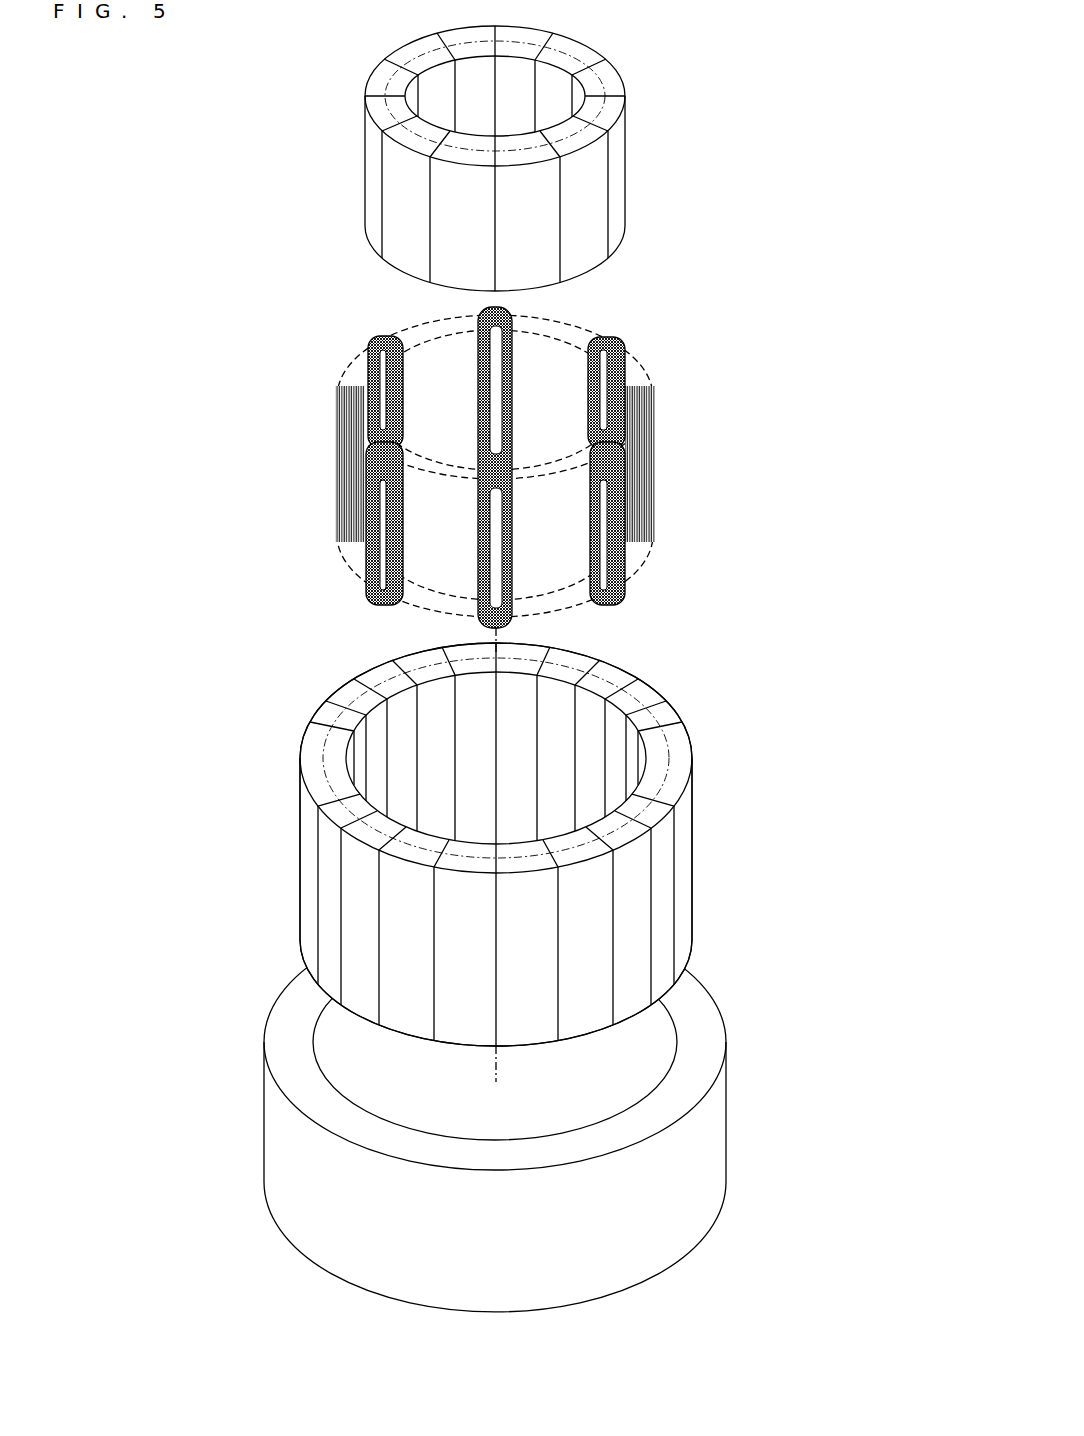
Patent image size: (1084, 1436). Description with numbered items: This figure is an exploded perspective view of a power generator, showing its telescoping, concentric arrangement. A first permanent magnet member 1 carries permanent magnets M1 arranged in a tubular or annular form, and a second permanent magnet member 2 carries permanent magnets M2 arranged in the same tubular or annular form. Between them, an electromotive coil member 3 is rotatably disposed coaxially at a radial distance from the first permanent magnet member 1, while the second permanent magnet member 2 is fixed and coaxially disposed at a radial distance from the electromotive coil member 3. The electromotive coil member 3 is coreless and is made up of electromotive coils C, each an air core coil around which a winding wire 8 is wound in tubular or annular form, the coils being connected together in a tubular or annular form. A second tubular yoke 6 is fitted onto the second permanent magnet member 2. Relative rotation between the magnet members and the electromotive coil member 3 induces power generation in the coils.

The first permanent magnet member 1 is at (646, 178).
The permanent magnets M1 is at (378, 100).
The second permanent magnet member 2 is at (707, 830).
The permanent magnets M2 is at (629, 672).
The electromotive coil member 3 is at (683, 475).
The winding wire 8 is at (380, 337).
The electromotive coil C is at (607, 336).
The second tubular yoke 6 is at (728, 1032).